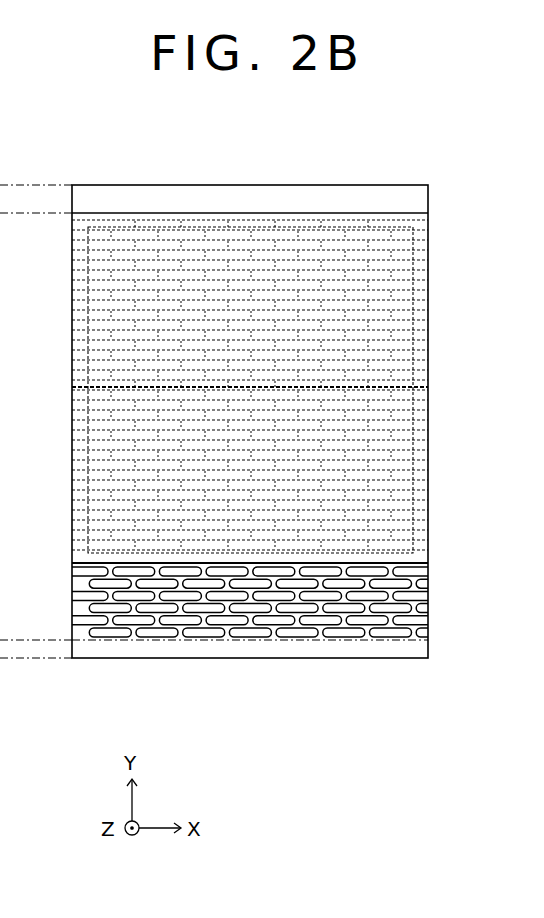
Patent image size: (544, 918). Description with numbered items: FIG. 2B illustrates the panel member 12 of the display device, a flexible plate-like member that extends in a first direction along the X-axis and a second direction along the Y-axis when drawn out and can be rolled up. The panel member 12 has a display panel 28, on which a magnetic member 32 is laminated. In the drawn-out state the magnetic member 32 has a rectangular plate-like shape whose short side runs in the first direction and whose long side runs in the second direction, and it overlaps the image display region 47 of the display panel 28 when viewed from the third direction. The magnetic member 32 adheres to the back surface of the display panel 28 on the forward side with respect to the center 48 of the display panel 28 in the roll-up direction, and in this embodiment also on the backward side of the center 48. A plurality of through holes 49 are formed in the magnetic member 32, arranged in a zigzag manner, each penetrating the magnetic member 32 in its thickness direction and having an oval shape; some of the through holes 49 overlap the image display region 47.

The panel member 12 is at (313, 169).
The display panel 28 is at (430, 284).
The image display region 47 is at (431, 354).
The center 48 is at (416, 388).
The magnetic member 32 is at (418, 583).
The through holes 49 is at (402, 607).